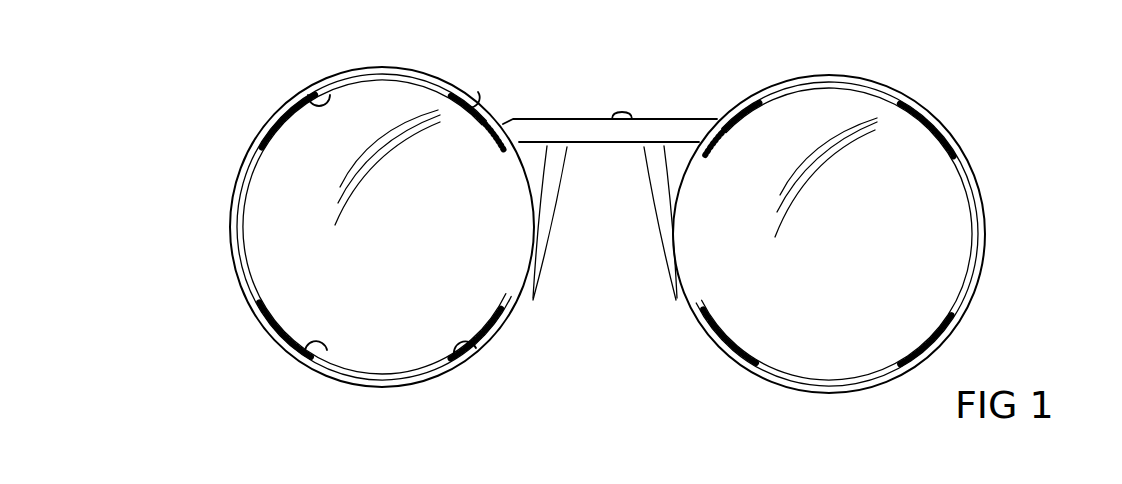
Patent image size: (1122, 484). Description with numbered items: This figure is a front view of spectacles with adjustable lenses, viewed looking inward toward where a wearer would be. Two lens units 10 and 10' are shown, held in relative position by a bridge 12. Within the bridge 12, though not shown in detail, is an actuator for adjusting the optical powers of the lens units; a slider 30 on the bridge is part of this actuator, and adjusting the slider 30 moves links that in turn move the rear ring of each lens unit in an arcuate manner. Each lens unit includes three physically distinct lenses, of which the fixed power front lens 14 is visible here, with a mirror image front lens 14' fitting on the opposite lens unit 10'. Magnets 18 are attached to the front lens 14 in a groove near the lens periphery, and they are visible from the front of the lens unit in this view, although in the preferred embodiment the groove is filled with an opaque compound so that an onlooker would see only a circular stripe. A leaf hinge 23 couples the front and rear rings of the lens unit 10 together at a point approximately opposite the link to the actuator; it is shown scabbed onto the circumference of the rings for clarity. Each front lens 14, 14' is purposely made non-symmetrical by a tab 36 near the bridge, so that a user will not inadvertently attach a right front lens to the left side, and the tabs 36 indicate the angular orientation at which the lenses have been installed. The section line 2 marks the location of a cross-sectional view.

The lens unit 10 is at (344, 227).
The lens unit 10' is at (883, 234).
The bridge 12 is at (645, 118).
The front lens 14 is at (387, 181).
The front lens 14' is at (826, 187).
The magnets 18 is at (327, 90).
The section line 2- 2 is at (560, 108).
The leaf hinge 23 is at (258, 333).
The slider 30 is at (622, 111).
The tab 36 is at (551, 165).